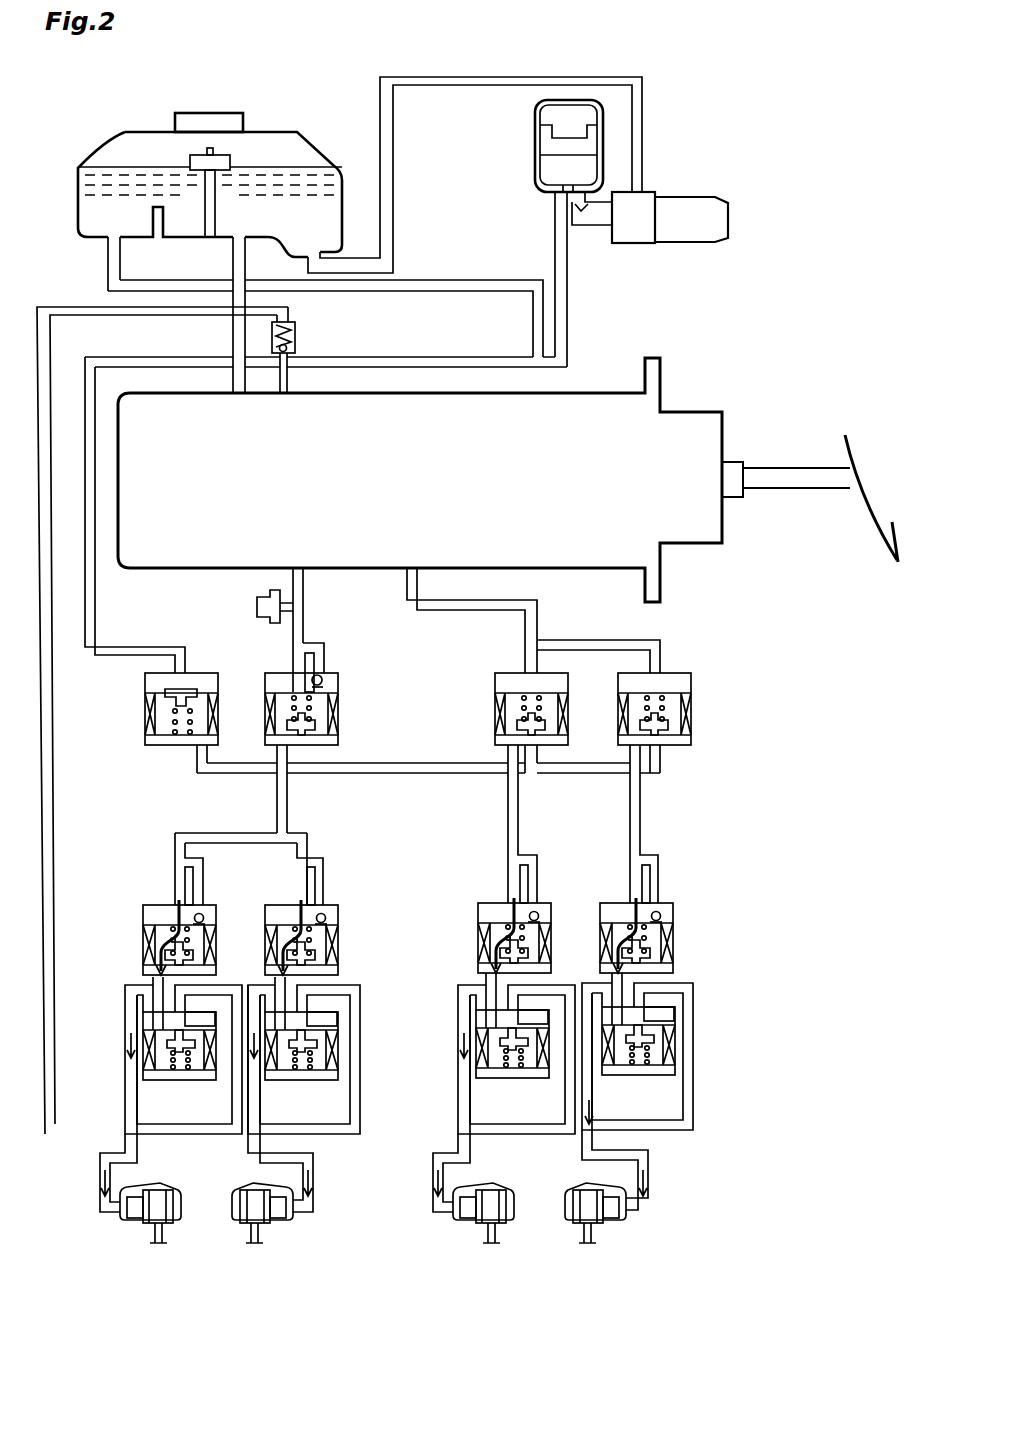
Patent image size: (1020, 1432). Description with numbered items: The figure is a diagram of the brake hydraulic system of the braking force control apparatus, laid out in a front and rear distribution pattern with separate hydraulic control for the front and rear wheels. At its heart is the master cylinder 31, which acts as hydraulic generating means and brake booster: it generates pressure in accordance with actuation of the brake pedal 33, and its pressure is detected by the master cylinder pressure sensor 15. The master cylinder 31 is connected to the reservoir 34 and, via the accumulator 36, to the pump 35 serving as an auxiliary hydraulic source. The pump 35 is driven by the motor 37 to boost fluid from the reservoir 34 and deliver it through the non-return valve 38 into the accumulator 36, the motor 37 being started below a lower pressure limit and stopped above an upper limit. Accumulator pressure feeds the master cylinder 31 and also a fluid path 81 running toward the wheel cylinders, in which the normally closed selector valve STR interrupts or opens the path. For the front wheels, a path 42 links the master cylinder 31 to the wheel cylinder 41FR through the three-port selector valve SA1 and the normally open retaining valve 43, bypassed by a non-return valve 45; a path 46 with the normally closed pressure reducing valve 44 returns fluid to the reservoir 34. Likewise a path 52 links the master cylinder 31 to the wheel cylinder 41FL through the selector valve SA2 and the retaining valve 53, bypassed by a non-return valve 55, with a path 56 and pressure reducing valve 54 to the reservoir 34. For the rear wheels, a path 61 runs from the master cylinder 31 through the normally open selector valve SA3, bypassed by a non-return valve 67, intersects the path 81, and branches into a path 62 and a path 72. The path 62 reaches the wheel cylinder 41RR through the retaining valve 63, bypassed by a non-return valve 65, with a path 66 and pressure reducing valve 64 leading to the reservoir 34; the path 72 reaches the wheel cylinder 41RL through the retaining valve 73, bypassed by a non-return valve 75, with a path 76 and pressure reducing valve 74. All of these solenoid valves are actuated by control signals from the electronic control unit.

The master cylinder pressure sensor 15 is at (257, 603).
The master cylinder 31 is at (610, 392).
The brake pedal 33 is at (870, 503).
The reservoir 34 is at (75, 195).
The pump 35 is at (623, 243).
The accumulator 36 is at (535, 130).
The motor 37 is at (693, 198).
The non-return valve 38 is at (573, 205).
The path 61 is at (293, 637).
The non-return valve 67 is at (340, 673).
The fluid path 81 is at (92, 657).
The selector valve STR is at (147, 745).
The selector valve SA1 is at (495, 705).
The selector valve SA2 is at (691, 720).
The selector valve SA3 is at (338, 712).
The path 42 is at (508, 838).
The retaining valve 43 is at (478, 905).
The pressure reducing valve 44 is at (508, 1078).
The non-return valve 45 is at (550, 905).
The path 46 is at (565, 1115).
The path 52 is at (643, 830).
The retaining valve 53 is at (600, 912).
The pressure reducing valve 54 is at (650, 1078).
The non-return valve 55 is at (673, 905).
The path 56 is at (693, 1082).
The path 62 is at (175, 833).
The retaining valve 63 is at (143, 905).
The pressure reducing valve 64 is at (178, 1080).
The non-return valve 65 is at (218, 908).
The path 66 is at (232, 1115).
The path 72 is at (308, 833).
The retaining valve 73 is at (340, 945).
The pressure reducing valve 74 is at (312, 1080).
The non-return valve 75 is at (340, 905).
The path 76 is at (360, 1065).
The wheel cylinder 41RR is at (187, 1168).
The wheel cylinder 41RL is at (233, 1205).
The wheel cylinder 41FR is at (488, 1185).
The wheel cylinder 41FL is at (566, 1205).